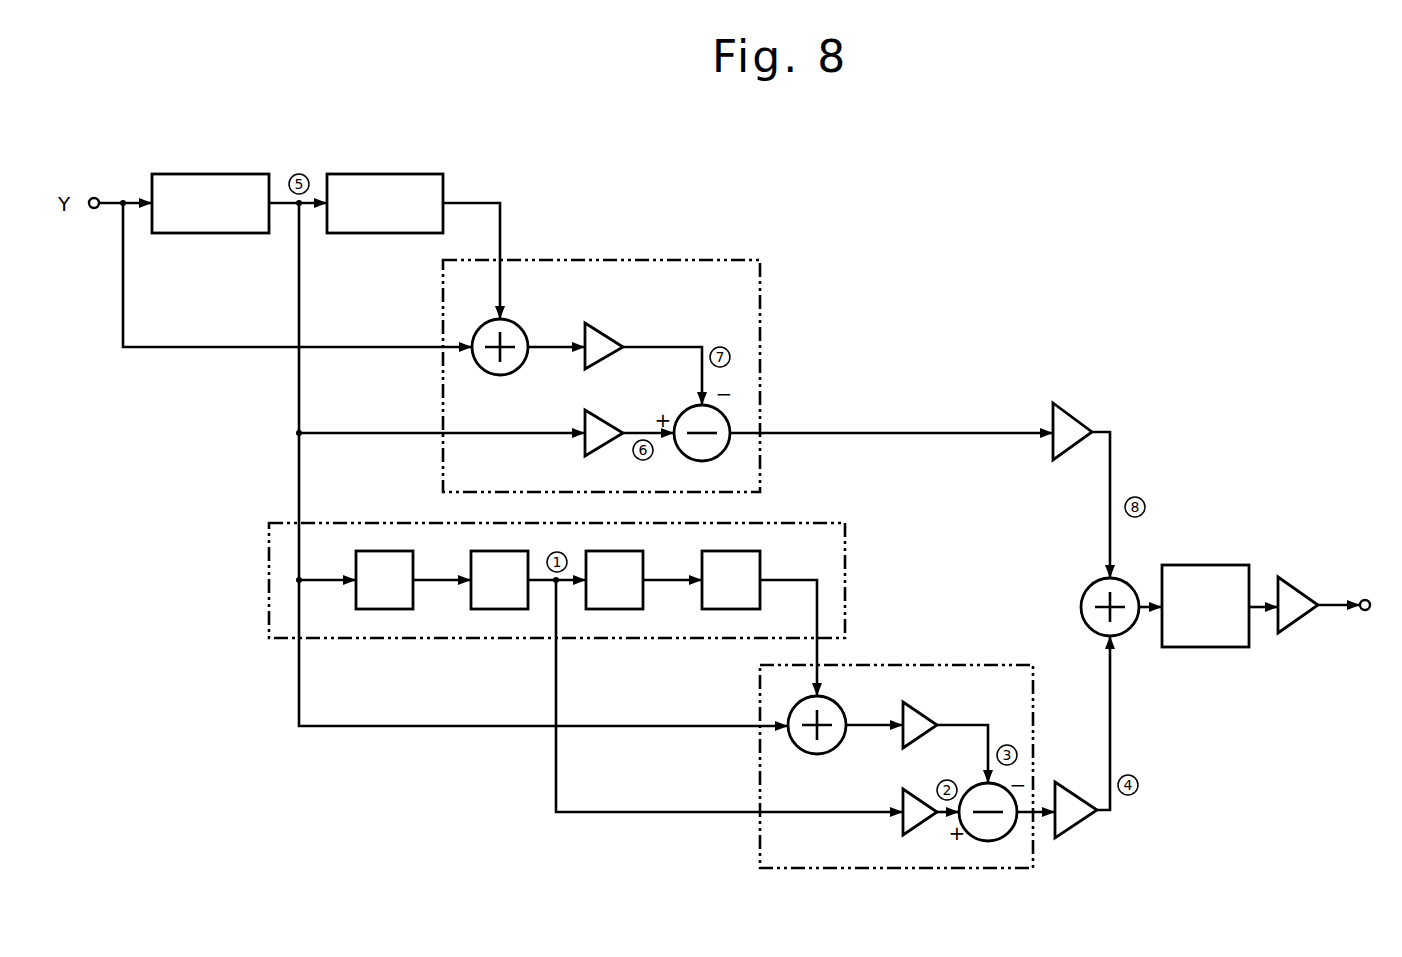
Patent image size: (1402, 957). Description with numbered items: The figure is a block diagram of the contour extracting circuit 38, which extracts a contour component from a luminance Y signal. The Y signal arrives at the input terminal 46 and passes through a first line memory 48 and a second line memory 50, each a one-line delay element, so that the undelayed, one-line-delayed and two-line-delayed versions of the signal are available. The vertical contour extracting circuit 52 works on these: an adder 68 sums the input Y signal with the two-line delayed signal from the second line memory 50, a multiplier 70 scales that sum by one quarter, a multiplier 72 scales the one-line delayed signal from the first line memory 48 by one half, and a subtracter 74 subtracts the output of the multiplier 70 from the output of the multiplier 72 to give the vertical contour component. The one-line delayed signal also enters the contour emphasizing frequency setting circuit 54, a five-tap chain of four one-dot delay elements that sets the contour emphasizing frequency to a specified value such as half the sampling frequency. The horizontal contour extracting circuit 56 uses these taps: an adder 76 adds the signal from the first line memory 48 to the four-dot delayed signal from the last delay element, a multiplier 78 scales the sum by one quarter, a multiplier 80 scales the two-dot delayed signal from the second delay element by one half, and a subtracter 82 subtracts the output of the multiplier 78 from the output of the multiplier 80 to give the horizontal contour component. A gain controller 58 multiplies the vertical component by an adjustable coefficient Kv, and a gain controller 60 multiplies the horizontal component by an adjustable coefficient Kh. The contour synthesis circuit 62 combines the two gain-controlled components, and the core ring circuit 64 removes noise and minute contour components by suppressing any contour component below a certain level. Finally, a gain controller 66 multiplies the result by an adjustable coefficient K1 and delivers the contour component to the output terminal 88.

The contour extracting circuit 38 is at (905, 318).
The input terminal 46 is at (98, 196).
The first line memory 48 is at (220, 176).
The second line memory 50 is at (396, 176).
The vertical contour extracting circuit 52 is at (636, 258).
The contour emphasizing frequency setting circuit 54 is at (802, 521).
The horizontal contour extracting circuit 56 is at (925, 664).
The gain controller 58 is at (1070, 412).
The gain controller 60 is at (1068, 795).
The contour synthesis circuit 62 is at (1092, 592).
The core ring circuit 64 is at (1240, 585).
The gain controller 66 is at (1285, 585).
The adder 68 is at (513, 337).
The multiplier 70 is at (600, 328).
The multiplier 72 is at (590, 440).
The subtracter 74 is at (700, 452).
The adder 76 is at (800, 738).
The multiplier 78 is at (903, 710).
The multiplier 80 is at (905, 815).
The subtracter 82 is at (996, 826).
The output terminal 88 is at (1368, 596).